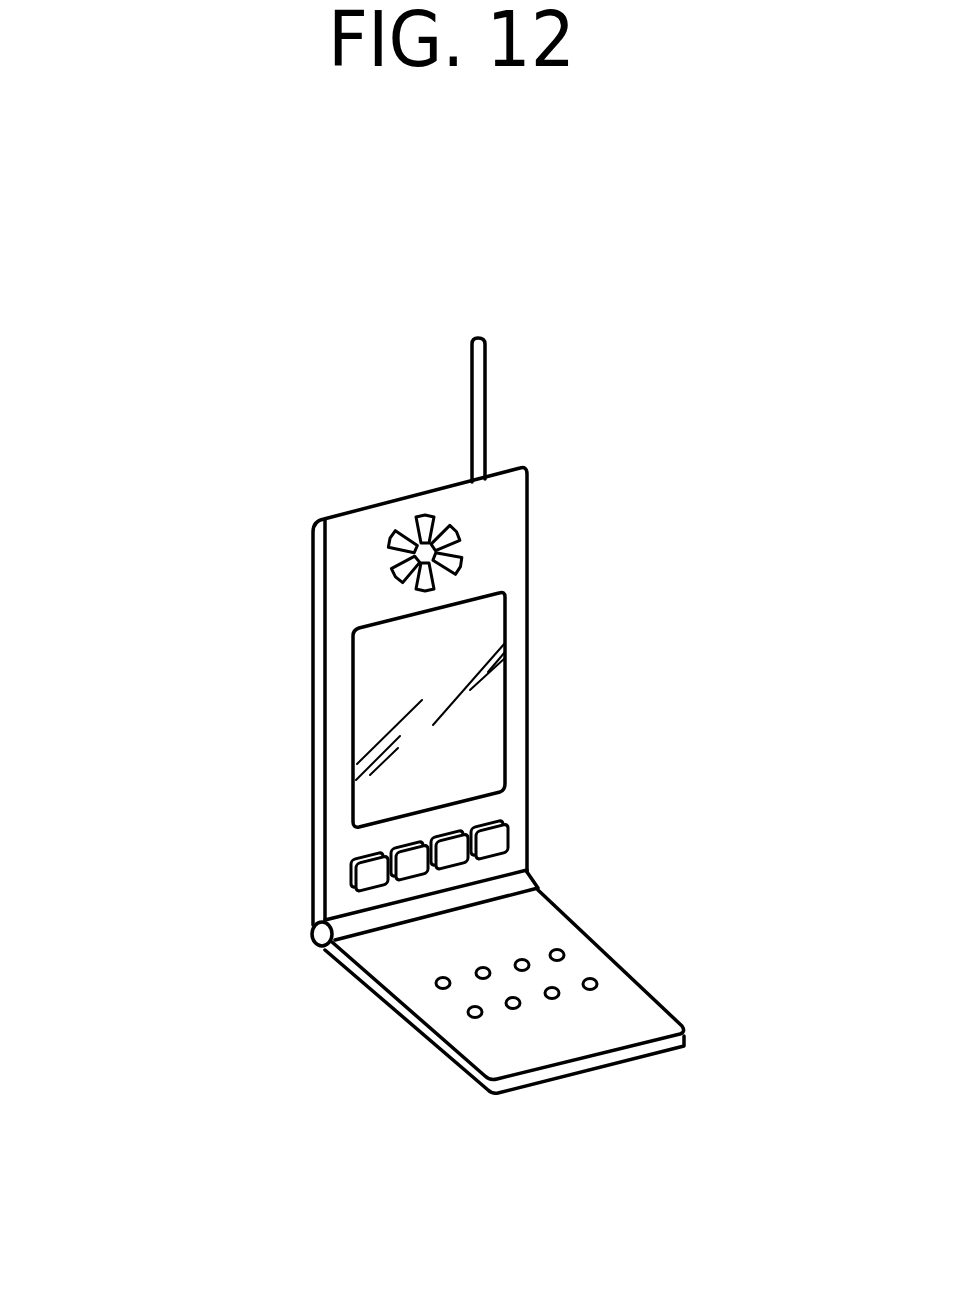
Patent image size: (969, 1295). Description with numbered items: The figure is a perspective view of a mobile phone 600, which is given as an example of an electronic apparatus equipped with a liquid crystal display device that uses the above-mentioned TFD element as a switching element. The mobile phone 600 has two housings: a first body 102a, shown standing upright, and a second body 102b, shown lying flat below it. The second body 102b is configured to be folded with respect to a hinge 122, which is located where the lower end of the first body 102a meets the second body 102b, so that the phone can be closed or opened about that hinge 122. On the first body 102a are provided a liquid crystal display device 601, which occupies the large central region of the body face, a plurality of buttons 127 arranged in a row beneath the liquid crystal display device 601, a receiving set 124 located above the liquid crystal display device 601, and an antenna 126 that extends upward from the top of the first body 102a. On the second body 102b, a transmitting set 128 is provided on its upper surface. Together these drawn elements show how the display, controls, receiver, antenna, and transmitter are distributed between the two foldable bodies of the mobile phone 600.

The mobile phone 600 is at (612, 555).
The first body 102a is at (283, 753).
The second body 102b is at (396, 1057).
The hinge 122 is at (312, 931).
The receiving set 124 is at (388, 577).
The antenna 126 is at (485, 367).
The liquid crystal display device 601 is at (487, 723).
The buttons 127 is at (497, 840).
The transmitting set 128 is at (598, 982).